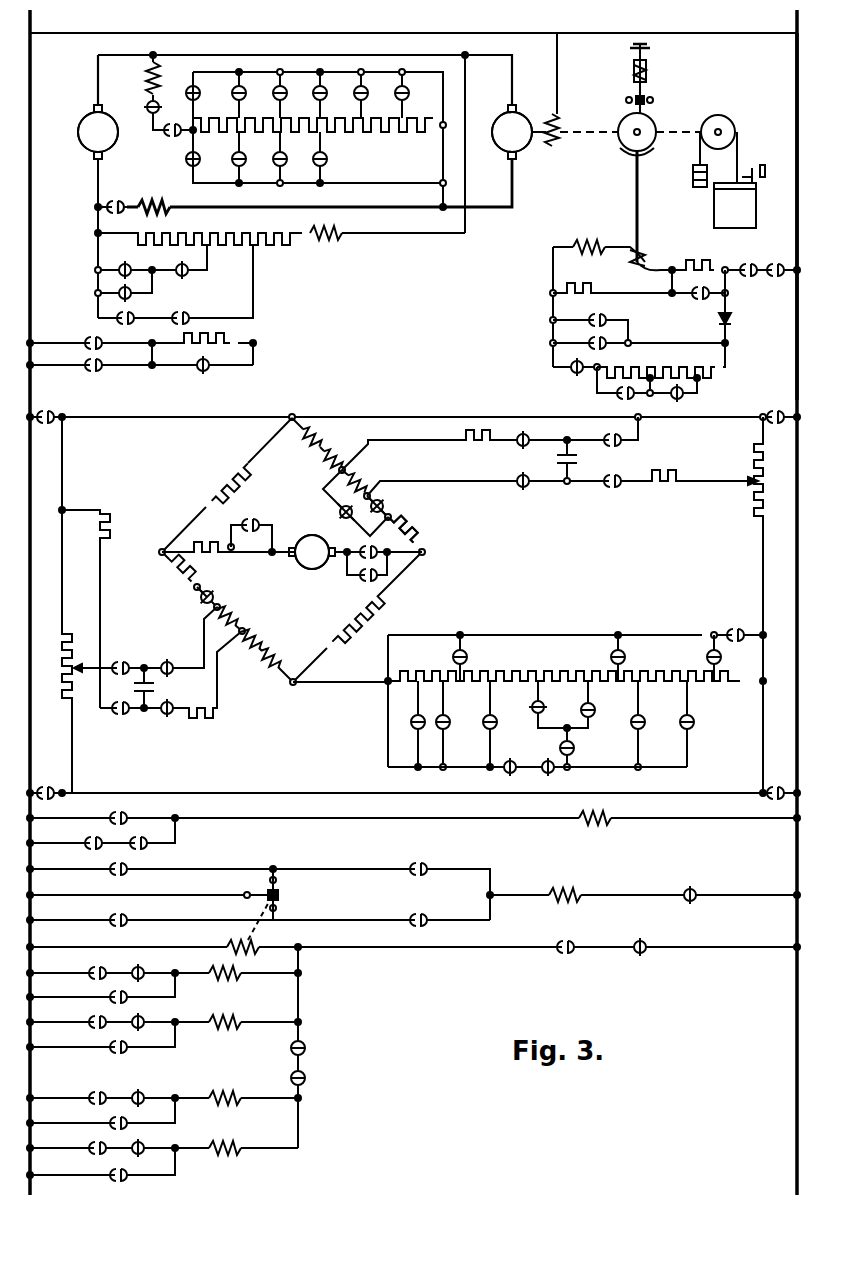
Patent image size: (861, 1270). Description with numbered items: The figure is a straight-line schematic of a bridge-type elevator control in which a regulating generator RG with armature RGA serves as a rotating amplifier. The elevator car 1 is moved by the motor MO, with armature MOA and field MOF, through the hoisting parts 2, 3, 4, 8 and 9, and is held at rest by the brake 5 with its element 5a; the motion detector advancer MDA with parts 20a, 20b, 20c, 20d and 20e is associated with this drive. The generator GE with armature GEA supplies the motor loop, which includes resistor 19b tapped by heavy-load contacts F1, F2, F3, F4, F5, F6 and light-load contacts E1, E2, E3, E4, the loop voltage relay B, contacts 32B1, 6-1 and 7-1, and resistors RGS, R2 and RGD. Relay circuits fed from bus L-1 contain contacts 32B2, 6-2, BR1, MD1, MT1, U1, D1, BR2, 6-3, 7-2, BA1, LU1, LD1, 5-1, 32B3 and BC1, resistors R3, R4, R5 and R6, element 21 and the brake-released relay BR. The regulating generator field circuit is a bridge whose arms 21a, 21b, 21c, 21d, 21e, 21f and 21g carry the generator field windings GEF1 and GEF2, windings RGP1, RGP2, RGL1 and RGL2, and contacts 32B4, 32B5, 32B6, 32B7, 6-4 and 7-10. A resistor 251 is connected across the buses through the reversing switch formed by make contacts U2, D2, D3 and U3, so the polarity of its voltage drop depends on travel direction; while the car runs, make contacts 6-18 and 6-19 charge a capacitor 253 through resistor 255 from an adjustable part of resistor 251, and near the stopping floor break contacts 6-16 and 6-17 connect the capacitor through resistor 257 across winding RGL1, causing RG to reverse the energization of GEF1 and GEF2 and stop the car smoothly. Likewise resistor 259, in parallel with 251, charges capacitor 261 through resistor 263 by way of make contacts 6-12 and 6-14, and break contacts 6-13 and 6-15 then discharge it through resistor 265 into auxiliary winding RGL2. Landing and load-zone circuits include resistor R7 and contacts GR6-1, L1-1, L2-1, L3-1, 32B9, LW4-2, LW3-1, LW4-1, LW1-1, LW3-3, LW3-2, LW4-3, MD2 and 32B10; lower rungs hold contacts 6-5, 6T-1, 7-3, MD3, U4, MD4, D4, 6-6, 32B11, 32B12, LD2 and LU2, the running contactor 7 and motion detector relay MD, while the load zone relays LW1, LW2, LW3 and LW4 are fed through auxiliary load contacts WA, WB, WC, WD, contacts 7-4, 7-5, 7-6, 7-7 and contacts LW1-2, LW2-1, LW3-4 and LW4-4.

The bus L-1 is at (797, 50).
The generator GE is at (64, 115).
The generator armature GEA is at (78, 137).
The loop voltage relay B is at (147, 78).
The cable-stretch relay contact 32B1 is at (147, 107).
The running relay contact 6-1 is at (168, 136).
The field resistor 19b is at (420, 210).
The heavy-load contact F1 is at (205, 95).
The heavy-load contact F2 is at (251, 93).
The heavy-load contact F3 is at (292, 93).
The heavy-load contact F4 is at (332, 93).
The heavy-load contact F5 is at (373, 93).
The heavy-load contact F6 is at (414, 93).
The light-load contact E1 is at (205, 157).
The light-load contact E2 is at (251, 159).
The light-load contact E3 is at (292, 159).
The light-load contact E4 is at (332, 159).
The running contactor contact 7-1 is at (113, 203).
The resistor RGS is at (180, 204).
The motor MO is at (504, 103).
The motor armature MOA is at (496, 146).
The motor field MOF is at (556, 103).
The shaft 2 is at (684, 137).
The drive sheave 3 is at (654, 120).
The secondary sheave 4 is at (726, 118).
The brake 5 is at (632, 183).
The rope contact 5a is at (634, 252).
The compensating rope 8 is at (738, 152).
The counterweight 9 is at (692, 178).
The elevator car 1 is at (756, 200).
The motion detector advancer MDA is at (700, 85).
The brake shoe 20a is at (632, 52).
The brake plunger 20b is at (634, 106).
The brake spring 20c is at (648, 52).
The brake lever 20d is at (626, 100).
The brake lever 20e is at (653, 100).
The resistor R2 is at (205, 233).
The resistor RGD is at (326, 240).
The cable-stretch relay contact 32B2 is at (110, 268).
The running relay contact 6-2 is at (190, 276).
The brake-released relay contact BR1 is at (132, 298).
The motion detector relay contact MD1 is at (116, 312).
The timing relay contact MT1 is at (188, 312).
The up switch contact U1 is at (90, 338).
The down switch contact D1 is at (92, 372).
The resistor R3 is at (216, 334).
The brake-released relay contact BR2 is at (200, 372).
The brake-released relay BR is at (586, 242).
The resistor R4 is at (702, 260).
The running relay contact 6-3 is at (758, 254).
The running contactor contact 7-2 is at (780, 278).
The resistor R5 is at (570, 284).
The brake relay contact BA1 is at (702, 300).
The rectifier bridge 21 is at (732, 322).
The up leveling relay contact LU1 is at (596, 318).
The down leveling relay contact LD1 is at (596, 350).
The brake contact 5-1 is at (576, 374).
The resistor R6 is at (700, 366).
The cable-stretch relay contact 32B3 is at (614, 400).
The brake-modifier relay contact BC1 is at (680, 398).
The make contact U2 is at (40, 408).
The make contact D2 is at (778, 412).
The bridge coil 21b is at (260, 446).
The generator field winding GEF1 is at (324, 438).
The regulator winding RGP1 is at (322, 462).
The field winding of regulating generator RGL1 is at (380, 474).
The cable-stretch relay contact 32B4 is at (334, 504).
The cable-stretch relay contact 32B5 is at (382, 508).
The bridge coil 21c is at (440, 521).
The bridge coil 21f is at (420, 541).
The bridge coil 21d is at (318, 655).
The bridge coil 21e is at (176, 572).
The bridge arm 21a is at (194, 590).
The cable-stretch relay contact 32B7 is at (202, 605).
The auxiliary field winding of regulating generator RGL2 is at (238, 614).
The regulator winding RGP2 is at (260, 644).
The generator field winding GEF2 is at (290, 660).
The bridge coil 21g is at (206, 542).
The cable-stretch relay contact 32B6 is at (258, 520).
The regulating generator RG is at (286, 531).
The regulating generator armature RGA is at (302, 566).
The running relay contact 6-4 is at (358, 546).
The running contactor contact 7-10 is at (368, 582).
The resistor 257 is at (486, 450).
The break contact of running relay 6-16 is at (528, 446).
The make contact of running relay 6-18 is at (620, 446).
The capacitor 253 is at (572, 468).
The break contact of running relay 6-17 is at (528, 486).
The make contact of running relay 6-19 is at (608, 486).
The resistor 255 is at (682, 474).
The resistor 251 is at (752, 506).
The resistor 263 is at (110, 528).
The resistor 259 is at (80, 712).
The make contact of running relay 6-14 is at (124, 656).
The break contact of running relay 6-15 is at (172, 656).
The capacitor 261 is at (154, 690).
The make contact of running relay 6-12 is at (122, 714).
The break contact of running relay 6-13 is at (168, 714).
The resistor 265 is at (192, 716).
The resistor R7 is at (540, 670).
The full speed relay contact GR6-1 is at (738, 628).
The third landing relay contact L1-1 is at (454, 662).
The second landing relay contact L2-1 is at (610, 656).
The leveling-field-control relay contact L3-1 is at (708, 664).
The cable-stretch relay contact 32B9 is at (410, 718).
The load zone relay contact LW4-2 is at (460, 710).
The load zone relay contact LW3-1 is at (484, 728).
The load zone relay contact LW4-1 is at (532, 708).
The load zone relay contact LW1-1 is at (596, 712).
The load zone relay contact LW3-3 is at (574, 748).
The load zone relay contact LW3-2 is at (646, 720).
The load zone relay contact LW4-3 is at (694, 718).
The motion detector relay contact MD2 is at (516, 756).
The cable-stretch relay contact 32B10 is at (554, 772).
The make contact D3 is at (215, 782).
The make contact U3 is at (782, 782).
The running relay contact 6-5 is at (122, 816).
The running contactor 7 is at (592, 826).
The timing relay contact 6T-1 is at (88, 840).
The running contactor contact 7-3 is at (146, 848).
The motion detector relay contact MD3 is at (126, 876).
The up switch contact U4 is at (422, 864).
The motion detector relay MD is at (566, 888).
The cable-stretch relay contact 32B11 is at (686, 892).
The motion detector relay contact MD4 is at (122, 918).
The down switch contact D4 is at (422, 914).
The running relay contact 6-6 is at (570, 944).
The cable-stretch relay contact 32B12 is at (636, 944).
The down leveling relay contact LD2 is at (305, 1048).
The up leveling relay contact LU2 is at (305, 1076).
The auxiliary load contact WA is at (90, 968).
The running contactor contact 7-4 is at (144, 970).
The load zone relay LW1 is at (242, 980).
The load zone relay contact LW1-2 is at (106, 994).
The auxiliary load contact WB is at (90, 1017).
The running contactor contact 7-5 is at (144, 1019).
The load zone relay LW2 is at (250, 1034).
The load zone relay contact LW2-1 is at (106, 1052).
The auxiliary load contact WC is at (90, 1093).
The running contactor contact 7-6 is at (144, 1095).
The load zone relay LW3 is at (246, 1084).
The load zone relay contact LW3-4 is at (106, 1120).
The auxiliary load contact WD is at (90, 1143).
The running contactor contact 7-7 is at (144, 1145).
The load zone relay LW4 is at (248, 1134).
The load zone relay contact LW4-4 is at (106, 1172).